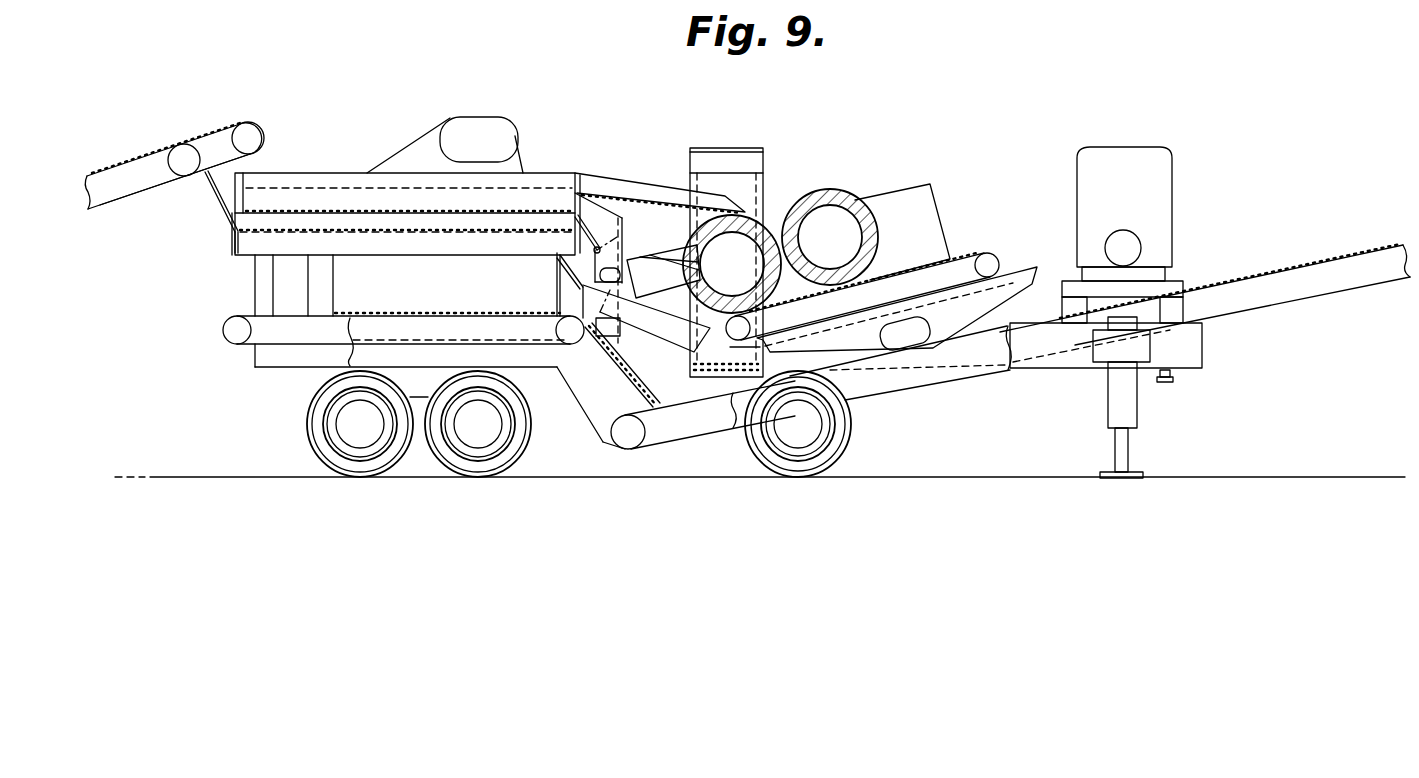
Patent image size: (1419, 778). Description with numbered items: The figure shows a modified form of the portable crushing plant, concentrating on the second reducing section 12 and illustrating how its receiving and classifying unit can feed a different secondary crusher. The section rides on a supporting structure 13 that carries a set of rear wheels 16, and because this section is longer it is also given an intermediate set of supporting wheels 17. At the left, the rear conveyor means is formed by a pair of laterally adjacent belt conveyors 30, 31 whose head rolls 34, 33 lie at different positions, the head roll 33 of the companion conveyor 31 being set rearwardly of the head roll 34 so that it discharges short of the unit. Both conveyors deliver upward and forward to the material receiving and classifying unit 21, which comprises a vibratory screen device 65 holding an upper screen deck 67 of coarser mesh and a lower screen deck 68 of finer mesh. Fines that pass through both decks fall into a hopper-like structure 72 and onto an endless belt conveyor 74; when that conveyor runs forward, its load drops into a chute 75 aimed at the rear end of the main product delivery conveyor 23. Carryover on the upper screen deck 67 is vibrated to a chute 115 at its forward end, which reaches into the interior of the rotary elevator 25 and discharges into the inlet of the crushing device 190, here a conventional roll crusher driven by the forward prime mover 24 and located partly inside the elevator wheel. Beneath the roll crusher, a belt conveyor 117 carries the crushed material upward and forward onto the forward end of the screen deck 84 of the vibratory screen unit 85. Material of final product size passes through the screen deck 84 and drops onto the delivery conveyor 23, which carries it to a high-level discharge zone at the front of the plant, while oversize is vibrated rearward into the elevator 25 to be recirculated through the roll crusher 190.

The second reducing section 12 is at (627, 122).
The supporting structure 13 is at (597, 421).
The rear wheels 16 is at (413, 471).
The intermediate set of supporting wheels 17 is at (846, 456).
The material receiving and classifying unit 21 is at (333, 160).
The front conveyor means 23 is at (1293, 263).
The prime mover 24 is at (1163, 194).
The elevator 25 is at (740, 148).
The belt conveyor 30 is at (247, 124).
The companion belt conveyor 31 is at (141, 192).
The head roll 33 is at (184, 144).
The head roll 34 is at (255, 133).
The vibratory screen device 65 is at (232, 240).
The upper screen deck 67 is at (397, 195).
The lower screen deck 68 is at (262, 237).
The hopper-like structure 72 is at (456, 296).
The endless belt conveyor 74 is at (222, 333).
The chute 75 is at (626, 384).
The screen deck 84 is at (1007, 270).
The vibratory screen unit 85 is at (1042, 266).
The chute 115 is at (651, 165).
The belt conveyor 117 is at (968, 262).
The roll crusher 190 is at (791, 190).